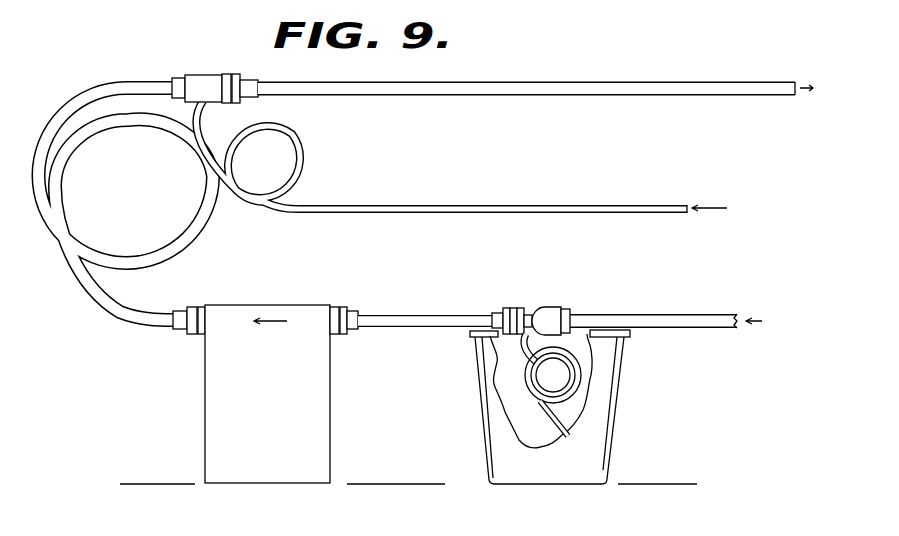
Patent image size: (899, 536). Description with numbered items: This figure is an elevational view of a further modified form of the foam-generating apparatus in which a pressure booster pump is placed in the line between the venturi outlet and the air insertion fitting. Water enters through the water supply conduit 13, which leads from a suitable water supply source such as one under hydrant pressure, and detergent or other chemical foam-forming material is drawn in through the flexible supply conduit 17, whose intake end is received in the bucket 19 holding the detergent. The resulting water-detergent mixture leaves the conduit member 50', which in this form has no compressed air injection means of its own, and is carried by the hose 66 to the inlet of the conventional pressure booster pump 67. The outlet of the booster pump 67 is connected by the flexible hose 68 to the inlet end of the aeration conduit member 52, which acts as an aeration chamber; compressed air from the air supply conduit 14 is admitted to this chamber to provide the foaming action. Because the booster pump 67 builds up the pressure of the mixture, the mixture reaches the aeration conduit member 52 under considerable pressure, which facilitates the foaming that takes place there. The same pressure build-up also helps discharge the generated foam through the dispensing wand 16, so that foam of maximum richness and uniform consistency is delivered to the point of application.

The water supply conduit 13 is at (692, 318).
The air supply conduit 14 is at (347, 207).
The tubular wand 16 is at (515, 96).
The flexible supply conduit 17 is at (523, 360).
The bucket 19 is at (612, 447).
The conduit member 50' is at (533, 300).
The aeration conduit member 52 is at (202, 77).
The hose 66 is at (417, 318).
The pressure booster pump 67 is at (320, 310).
The flexible hose 68 is at (121, 318).